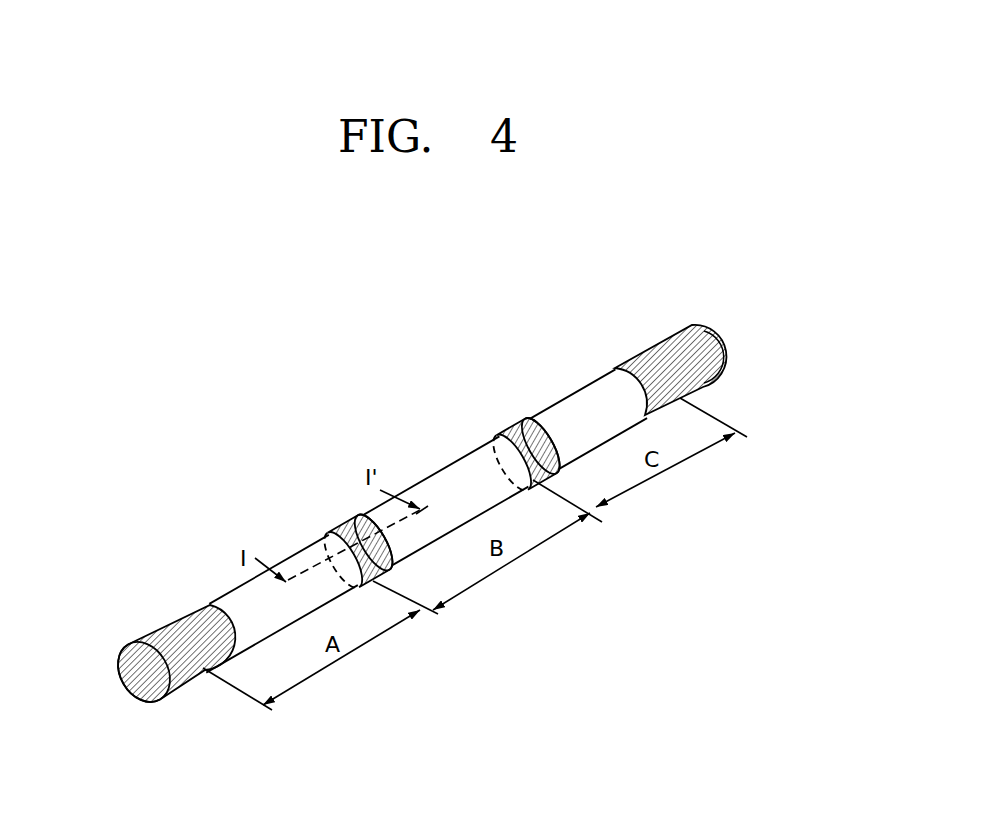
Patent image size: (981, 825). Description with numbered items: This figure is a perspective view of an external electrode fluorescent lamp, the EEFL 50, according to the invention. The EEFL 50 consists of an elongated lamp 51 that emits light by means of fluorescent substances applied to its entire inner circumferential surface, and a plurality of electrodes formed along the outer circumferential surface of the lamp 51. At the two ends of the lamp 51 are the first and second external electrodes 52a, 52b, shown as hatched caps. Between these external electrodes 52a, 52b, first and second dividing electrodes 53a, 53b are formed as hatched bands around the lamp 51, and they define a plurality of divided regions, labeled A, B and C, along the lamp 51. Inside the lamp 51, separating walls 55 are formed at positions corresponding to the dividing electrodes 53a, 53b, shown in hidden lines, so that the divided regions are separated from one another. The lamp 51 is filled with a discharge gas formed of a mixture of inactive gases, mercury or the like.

The EEFL 50 is at (112, 493).
The lamp 51 is at (552, 393).
The first external electrode 52a is at (180, 632).
The second external electrode 52b is at (660, 352).
The first dividing electrode 53a is at (352, 520).
The second dividing electrode 53b is at (520, 425).
The separating wall 55 is at (333, 537).